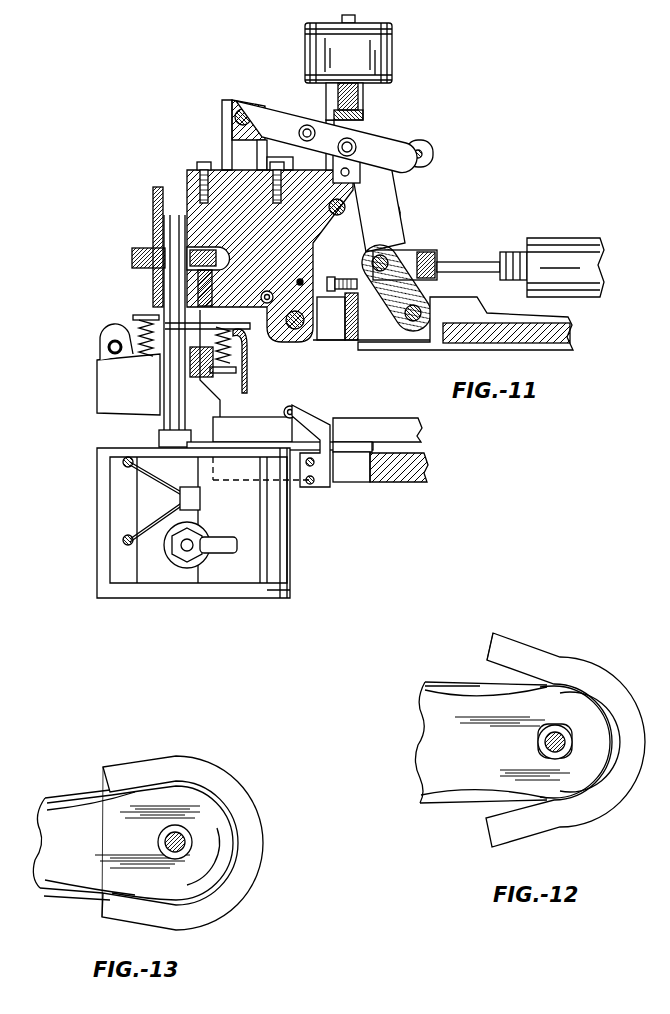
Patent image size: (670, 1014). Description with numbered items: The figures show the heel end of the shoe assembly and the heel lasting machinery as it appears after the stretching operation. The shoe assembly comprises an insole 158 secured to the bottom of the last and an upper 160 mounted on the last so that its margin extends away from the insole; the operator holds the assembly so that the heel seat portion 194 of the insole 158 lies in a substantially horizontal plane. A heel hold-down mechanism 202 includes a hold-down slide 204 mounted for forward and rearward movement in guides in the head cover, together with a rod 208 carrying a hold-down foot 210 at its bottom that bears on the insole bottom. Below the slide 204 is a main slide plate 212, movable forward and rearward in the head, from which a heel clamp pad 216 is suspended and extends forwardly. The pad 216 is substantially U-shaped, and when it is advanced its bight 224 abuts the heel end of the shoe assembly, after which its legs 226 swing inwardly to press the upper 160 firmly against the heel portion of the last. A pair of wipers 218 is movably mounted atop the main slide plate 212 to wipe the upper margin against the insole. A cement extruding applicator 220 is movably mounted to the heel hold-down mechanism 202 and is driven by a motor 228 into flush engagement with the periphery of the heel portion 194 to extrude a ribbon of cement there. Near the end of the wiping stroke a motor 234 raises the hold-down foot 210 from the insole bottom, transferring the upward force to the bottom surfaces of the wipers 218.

In FIG. 13, the insole 158 is at (82, 848).
In FIG. 12, the insole 158 is at (482, 765).
In FIG. 13, the upper 160 is at (48, 893).
In FIG. 12, the upper 160 is at (448, 684).
In FIG. 13, the heel seat portion 194 is at (188, 801).
In FIG. 12, the heel seat portion 194 is at (575, 702).
In FIG. 11, the heel hold-down mechanism 202 is at (120, 249).
In FIG. 11, the hold-down slide 204 is at (560, 331).
In FIG. 11, the rod 208 is at (165, 410).
In FIG. 11, the hold-down foot 210 is at (159, 437).
In FIG. 13, the hold-down foot 210 is at (158, 843).
In FIG. 12, the hold-down foot 210 is at (557, 729).
In FIG. 11, the main slide plate 212 is at (392, 468).
In FIG. 11, the heel clamp pad 216 is at (228, 594).
In FIG. 13, the heel clamp pad 216 is at (90, 921).
In FIG. 12, the heel clamp pad 216 is at (552, 636).
In FIG. 11, the wipers 218 is at (247, 443).
In FIG. 11, the cement extruding applicator 220 is at (90, 341).
In FIG. 13, the bight 224 is at (220, 867).
In FIG. 12, the bight 224 is at (608, 762).
In FIG. 13, the legs 226 is at (125, 771).
In FIG. 12, the legs 226 is at (514, 828).
In FIG. 11, the motor 228 is at (373, 55).
In FIG. 11, the motor 234 is at (568, 243).